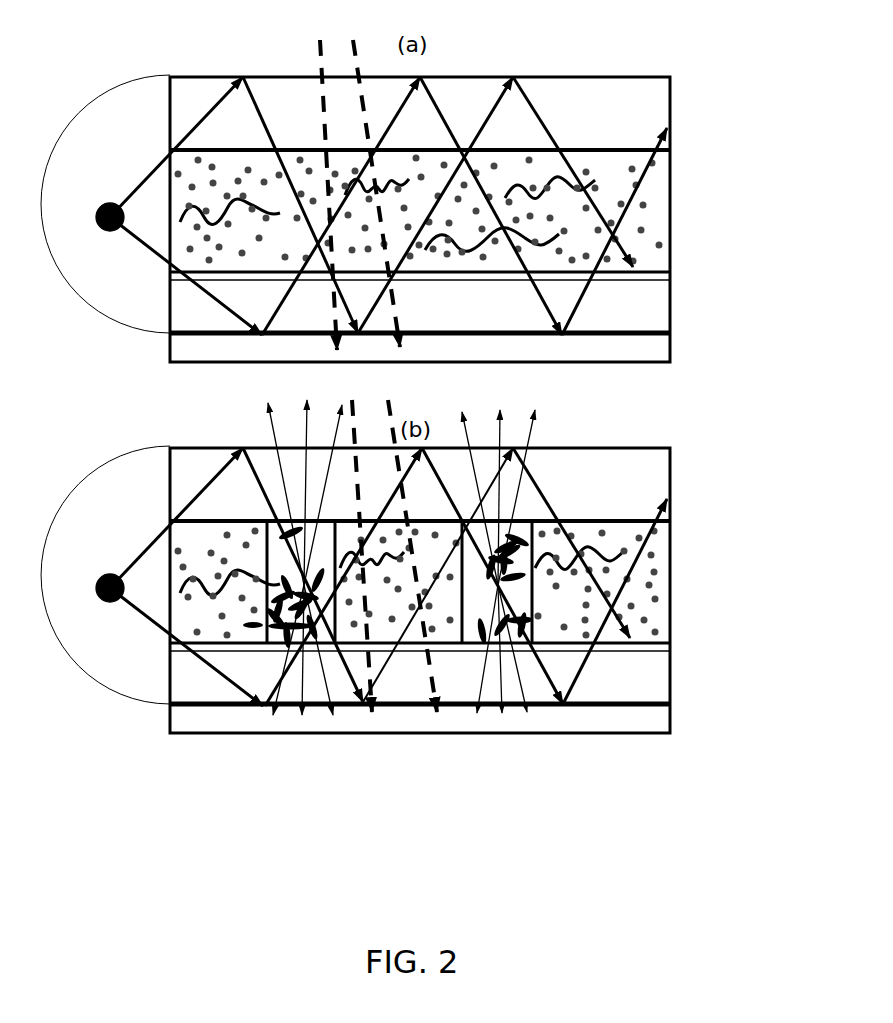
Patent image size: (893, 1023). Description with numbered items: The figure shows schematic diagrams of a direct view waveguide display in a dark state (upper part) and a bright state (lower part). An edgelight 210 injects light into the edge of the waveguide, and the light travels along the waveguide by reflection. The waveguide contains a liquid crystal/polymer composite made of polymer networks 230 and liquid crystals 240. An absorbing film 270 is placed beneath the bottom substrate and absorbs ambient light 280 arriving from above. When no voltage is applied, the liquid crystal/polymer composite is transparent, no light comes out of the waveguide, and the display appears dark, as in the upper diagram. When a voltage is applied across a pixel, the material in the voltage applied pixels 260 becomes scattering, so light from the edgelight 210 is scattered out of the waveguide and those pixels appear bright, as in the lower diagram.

The edgelight 210 is at (105, 389).
The polymer networks 230 is at (597, 175).
The liquid crystals 240 is at (635, 207).
The voltage applied pixels 260 is at (268, 643).
The absorbing film 270 is at (672, 352).
The ambient light 280 is at (376, 359).